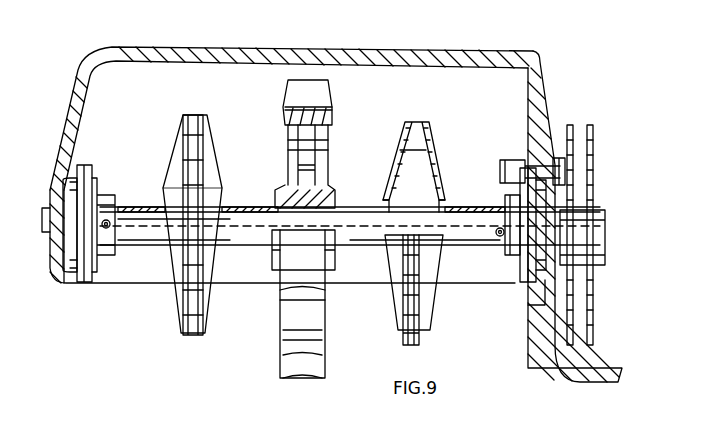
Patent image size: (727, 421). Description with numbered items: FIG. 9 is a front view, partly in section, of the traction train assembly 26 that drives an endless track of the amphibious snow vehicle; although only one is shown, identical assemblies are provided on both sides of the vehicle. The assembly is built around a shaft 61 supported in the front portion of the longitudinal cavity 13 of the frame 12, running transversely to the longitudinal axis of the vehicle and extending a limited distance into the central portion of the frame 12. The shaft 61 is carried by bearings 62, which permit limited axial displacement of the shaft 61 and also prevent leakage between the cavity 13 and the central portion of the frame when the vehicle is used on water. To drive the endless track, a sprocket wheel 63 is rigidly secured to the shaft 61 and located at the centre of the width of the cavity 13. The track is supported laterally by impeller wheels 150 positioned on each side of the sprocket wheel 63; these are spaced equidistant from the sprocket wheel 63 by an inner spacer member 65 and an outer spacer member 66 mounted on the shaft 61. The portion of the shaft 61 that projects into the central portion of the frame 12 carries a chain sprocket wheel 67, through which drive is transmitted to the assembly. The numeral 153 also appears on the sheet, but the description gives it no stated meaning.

The frame 12 is at (600, 373).
The longitudinal cavity 13 is at (237, 66).
The traction train assembly 26 is at (166, 330).
The shaft 61 is at (366, 213).
The bearings 62 is at (91, 250).
The sprocket wheel 63 is at (317, 310).
The inner spacer member 65 is at (250, 208).
The outer spacer member 66 is at (136, 207).
The chain sprocket wheel 67 is at (598, 280).
The impeller wheels 150 is at (209, 333).
The numeral 153 is at (382, 416).